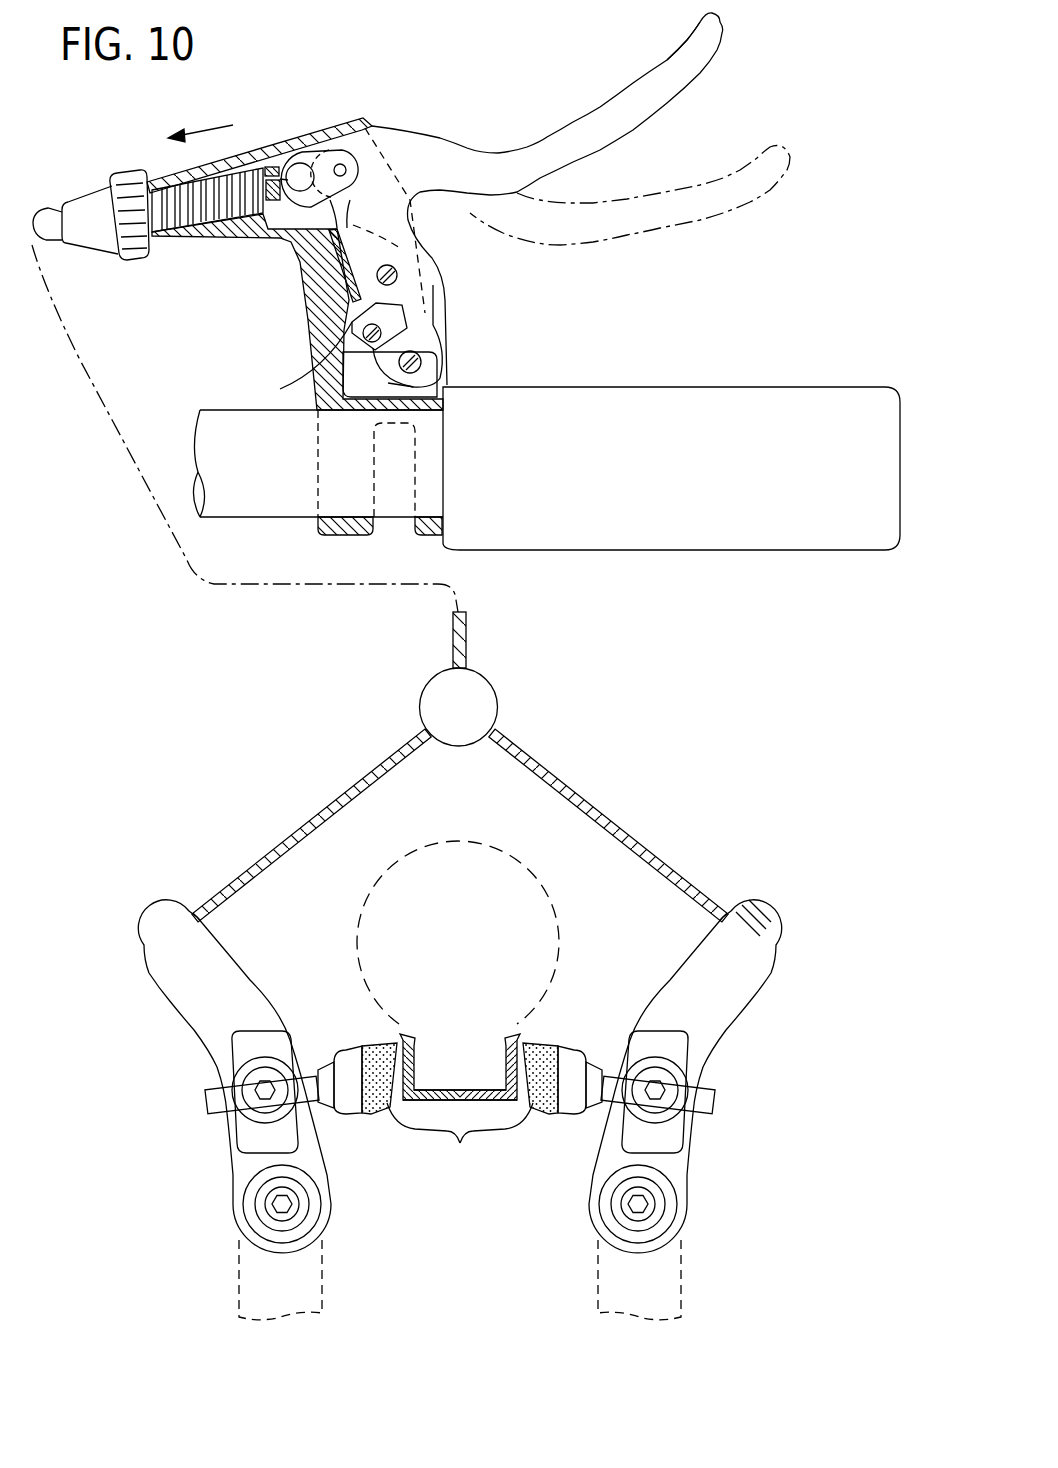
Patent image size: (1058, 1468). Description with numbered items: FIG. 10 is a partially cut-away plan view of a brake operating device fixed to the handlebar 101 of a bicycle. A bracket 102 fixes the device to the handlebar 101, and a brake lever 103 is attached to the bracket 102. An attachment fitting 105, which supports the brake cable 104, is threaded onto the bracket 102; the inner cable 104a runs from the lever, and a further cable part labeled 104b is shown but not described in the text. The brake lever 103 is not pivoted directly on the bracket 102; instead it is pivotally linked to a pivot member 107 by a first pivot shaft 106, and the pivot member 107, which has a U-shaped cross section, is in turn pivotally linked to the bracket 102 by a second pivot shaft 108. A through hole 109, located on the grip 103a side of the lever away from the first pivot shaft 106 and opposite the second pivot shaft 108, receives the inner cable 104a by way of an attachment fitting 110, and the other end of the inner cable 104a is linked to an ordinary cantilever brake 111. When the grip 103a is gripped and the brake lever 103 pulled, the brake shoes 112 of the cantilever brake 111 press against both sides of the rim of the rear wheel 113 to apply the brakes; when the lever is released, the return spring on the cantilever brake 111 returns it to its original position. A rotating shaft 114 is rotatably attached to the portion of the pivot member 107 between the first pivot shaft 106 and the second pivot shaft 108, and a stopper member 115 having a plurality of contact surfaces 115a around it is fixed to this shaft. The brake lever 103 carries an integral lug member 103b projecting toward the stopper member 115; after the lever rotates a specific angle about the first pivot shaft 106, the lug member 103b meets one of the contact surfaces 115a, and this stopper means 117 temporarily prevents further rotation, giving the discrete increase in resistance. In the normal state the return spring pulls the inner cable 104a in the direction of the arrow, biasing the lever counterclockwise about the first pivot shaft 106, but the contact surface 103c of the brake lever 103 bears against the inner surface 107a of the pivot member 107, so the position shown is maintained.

The handlebar 101 is at (255, 500).
The bracket 102 is at (173, 243).
The brake lever 103 is at (545, 125).
The grip 103a is at (648, 85).
The lug member 103b is at (437, 318).
The contact surface 103c is at (305, 255).
The brake cable 104 is at (44, 208).
The inner cable 104a is at (277, 170).
The cable nipple 104b is at (57, 243).
The attachment fitting 105 is at (84, 196).
The first pivot shaft 106 is at (397, 273).
The pivot member 107 is at (387, 363).
The inner surface 107a is at (353, 201).
The second pivot shaft 108 is at (413, 373).
The through hole 109 is at (347, 167).
The attachment fitting 110 is at (306, 163).
The cantilever brake 111 is at (668, 777).
The brake shoes 112 is at (460, 1134).
The rear wheel 113 is at (477, 845).
The rotating shaft 114 is at (362, 334).
The stopper member 115 is at (353, 322).
The contact surfaces 115a is at (478, 366).
The stopper means 117 is at (457, 333).